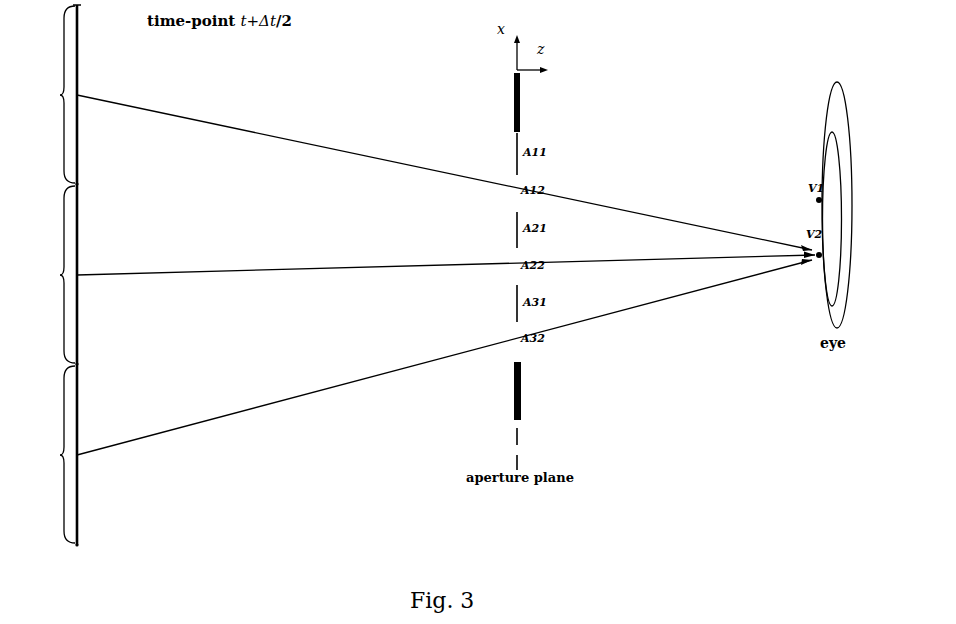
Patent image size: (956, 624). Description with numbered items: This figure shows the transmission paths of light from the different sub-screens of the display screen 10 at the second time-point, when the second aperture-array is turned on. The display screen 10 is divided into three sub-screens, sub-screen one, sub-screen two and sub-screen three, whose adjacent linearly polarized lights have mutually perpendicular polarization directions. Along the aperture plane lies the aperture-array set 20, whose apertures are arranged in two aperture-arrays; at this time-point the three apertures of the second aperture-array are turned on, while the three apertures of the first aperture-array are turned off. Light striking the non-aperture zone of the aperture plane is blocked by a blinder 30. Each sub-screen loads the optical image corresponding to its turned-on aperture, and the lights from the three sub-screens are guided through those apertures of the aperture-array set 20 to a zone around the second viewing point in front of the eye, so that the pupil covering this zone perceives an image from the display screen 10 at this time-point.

The display screen 10 is at (77, 500).
The aperture-array set 20 is at (516, 167).
The blinder 30 is at (517, 405).